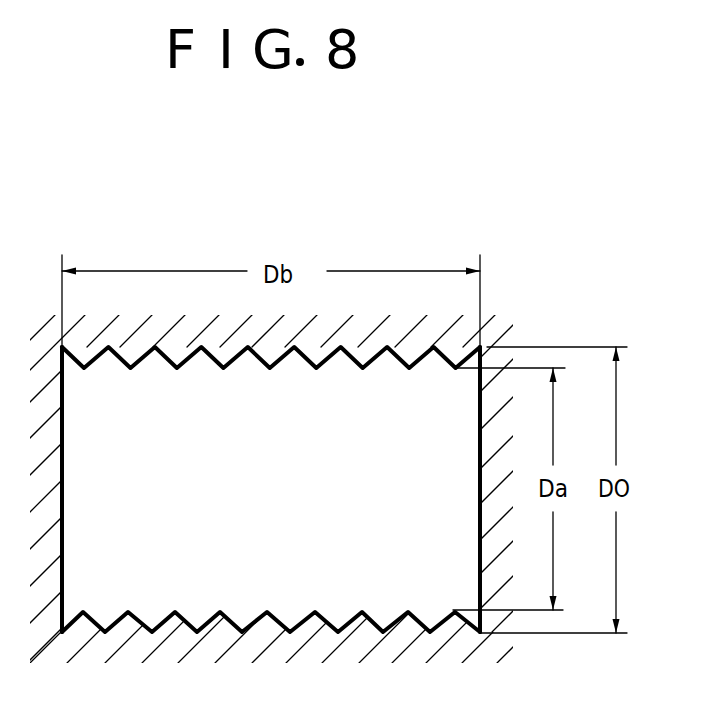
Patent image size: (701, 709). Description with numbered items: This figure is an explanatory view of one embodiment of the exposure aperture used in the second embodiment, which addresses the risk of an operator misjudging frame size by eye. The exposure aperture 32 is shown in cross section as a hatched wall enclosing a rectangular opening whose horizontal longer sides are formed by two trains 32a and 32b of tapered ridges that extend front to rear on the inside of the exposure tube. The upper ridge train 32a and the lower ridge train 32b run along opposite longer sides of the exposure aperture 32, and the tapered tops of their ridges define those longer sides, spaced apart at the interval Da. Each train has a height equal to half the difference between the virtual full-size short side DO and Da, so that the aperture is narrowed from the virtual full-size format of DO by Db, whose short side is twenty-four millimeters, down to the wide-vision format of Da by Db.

The exposure aperture 32 is at (63, 498).
The ridge train 32a is at (302, 349).
The ridge train 32b is at (278, 618).